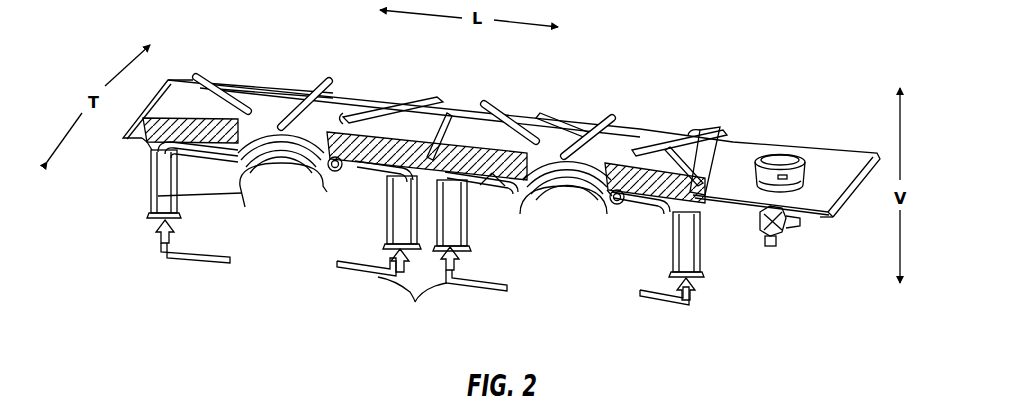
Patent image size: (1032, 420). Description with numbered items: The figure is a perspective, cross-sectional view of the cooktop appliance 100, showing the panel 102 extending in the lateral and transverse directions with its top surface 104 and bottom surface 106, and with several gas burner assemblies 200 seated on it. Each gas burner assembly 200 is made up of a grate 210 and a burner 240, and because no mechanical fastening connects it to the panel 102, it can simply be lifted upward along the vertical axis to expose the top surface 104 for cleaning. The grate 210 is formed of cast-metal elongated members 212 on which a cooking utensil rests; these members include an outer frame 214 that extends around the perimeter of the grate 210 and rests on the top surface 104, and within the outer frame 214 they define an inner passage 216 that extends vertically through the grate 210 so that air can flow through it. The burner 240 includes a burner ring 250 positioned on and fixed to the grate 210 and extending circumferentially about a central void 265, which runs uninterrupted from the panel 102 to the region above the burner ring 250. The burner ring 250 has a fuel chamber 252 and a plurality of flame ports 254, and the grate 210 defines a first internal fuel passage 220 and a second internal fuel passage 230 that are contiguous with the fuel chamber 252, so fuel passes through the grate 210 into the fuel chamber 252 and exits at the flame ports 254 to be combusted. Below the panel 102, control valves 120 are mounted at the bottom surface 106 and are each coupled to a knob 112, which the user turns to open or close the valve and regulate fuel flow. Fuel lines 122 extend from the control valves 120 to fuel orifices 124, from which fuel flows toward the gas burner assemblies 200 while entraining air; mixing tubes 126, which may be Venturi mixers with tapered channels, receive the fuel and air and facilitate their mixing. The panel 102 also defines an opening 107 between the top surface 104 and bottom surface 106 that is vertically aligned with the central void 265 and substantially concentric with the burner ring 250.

The cooktop appliance 100 is at (757, 70).
The panel 102 is at (237, 193).
The top surface 104 is at (347, 182).
The bottom surface 106 is at (822, 215).
The opening 107 is at (313, 200).
The knob 112 is at (780, 156).
The control valve 120 is at (787, 238).
The fuel line 122 is at (205, 259).
The fuel orifice 124 is at (155, 223).
The mixing tube 126 is at (157, 213).
The gas burner assembly 200 is at (187, 78).
The grate 210 is at (640, 173).
The elongated member 212 is at (233, 82).
The outer frame 214 is at (727, 157).
The inner passage 216 is at (278, 110).
The first internal fuel passage 220 is at (653, 208).
The second internal fuel passage 230 is at (496, 188).
The burner 240 is at (547, 160).
The burner ring 250 is at (505, 182).
The fuel chamber 252 is at (228, 170).
The flame port 254 is at (596, 188).
The central void 265 is at (338, 140).